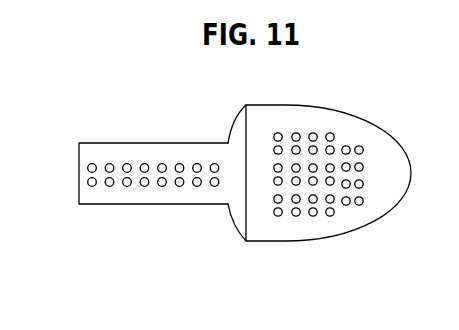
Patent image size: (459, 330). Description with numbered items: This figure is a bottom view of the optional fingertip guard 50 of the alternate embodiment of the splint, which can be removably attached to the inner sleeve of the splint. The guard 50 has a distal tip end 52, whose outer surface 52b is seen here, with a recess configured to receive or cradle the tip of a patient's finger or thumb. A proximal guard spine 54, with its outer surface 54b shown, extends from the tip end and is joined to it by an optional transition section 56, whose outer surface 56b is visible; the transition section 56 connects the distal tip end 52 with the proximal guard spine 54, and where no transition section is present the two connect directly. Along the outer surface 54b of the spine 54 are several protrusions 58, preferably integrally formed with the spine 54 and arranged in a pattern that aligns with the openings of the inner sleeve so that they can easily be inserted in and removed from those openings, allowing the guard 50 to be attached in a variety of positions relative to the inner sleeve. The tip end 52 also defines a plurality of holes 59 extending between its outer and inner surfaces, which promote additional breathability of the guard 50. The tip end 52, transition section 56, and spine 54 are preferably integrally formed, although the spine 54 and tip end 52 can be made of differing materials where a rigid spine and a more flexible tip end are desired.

The fingertip guard 50 is at (149, 90).
The distal tip end 52 is at (415, 257).
The outer surface of distal tip end 52b is at (360, 135).
The proximal guard spine 54 is at (222, 258).
The outer surface of guard spine 54b is at (92, 152).
The transition section 56 is at (245, 94).
The outer surface of transition section 56b is at (234, 207).
The protrusions 58 is at (144, 186).
The holes 59 is at (347, 204).